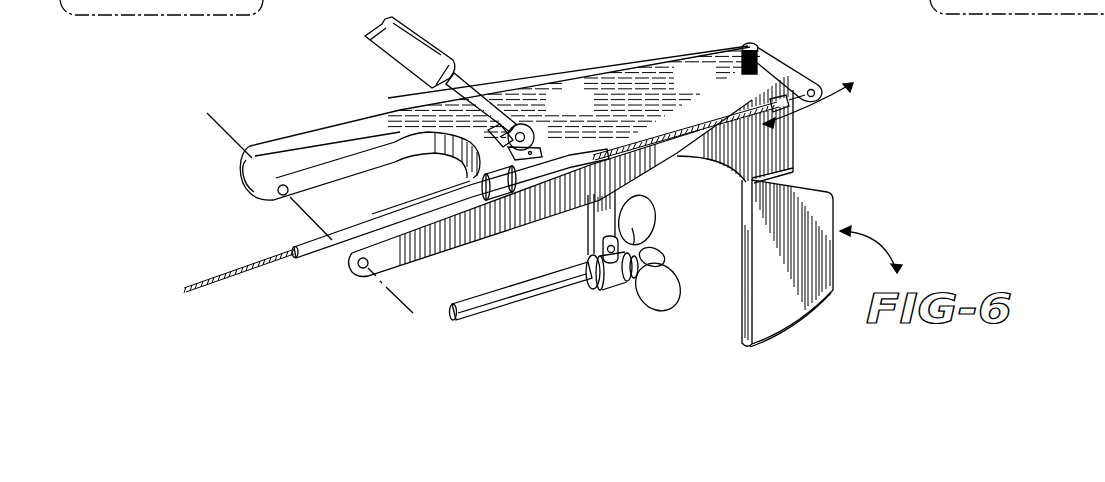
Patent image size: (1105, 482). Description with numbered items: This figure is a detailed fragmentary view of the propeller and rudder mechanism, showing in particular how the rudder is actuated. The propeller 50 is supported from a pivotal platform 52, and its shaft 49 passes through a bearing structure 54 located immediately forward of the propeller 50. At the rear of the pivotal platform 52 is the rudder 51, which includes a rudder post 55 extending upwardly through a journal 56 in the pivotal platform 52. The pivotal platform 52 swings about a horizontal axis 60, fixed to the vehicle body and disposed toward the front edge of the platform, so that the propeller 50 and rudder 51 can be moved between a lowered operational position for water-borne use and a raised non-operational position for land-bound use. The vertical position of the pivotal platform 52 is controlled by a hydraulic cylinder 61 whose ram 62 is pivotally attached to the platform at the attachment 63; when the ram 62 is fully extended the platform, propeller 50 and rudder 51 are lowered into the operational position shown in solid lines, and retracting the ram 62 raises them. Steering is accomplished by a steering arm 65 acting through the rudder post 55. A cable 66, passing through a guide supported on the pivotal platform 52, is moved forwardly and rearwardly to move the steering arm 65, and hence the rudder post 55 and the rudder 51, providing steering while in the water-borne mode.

The shaft 49 is at (540, 298).
The propeller 50 is at (663, 298).
The rudder 51 is at (821, 199).
The pivotal platform 52 is at (576, 86).
The bearing structure 54 is at (615, 288).
The rudder post 55 is at (742, 58).
The journal 56 is at (742, 73).
The horizontal axis 60 is at (246, 147).
The hydraulic cylinder 61 is at (433, 46).
The ram 62 is at (484, 96).
The pivotal attachment of ram to platform 63 is at (539, 128).
The steering arm 65 is at (785, 60).
The cable 66 is at (680, 138).